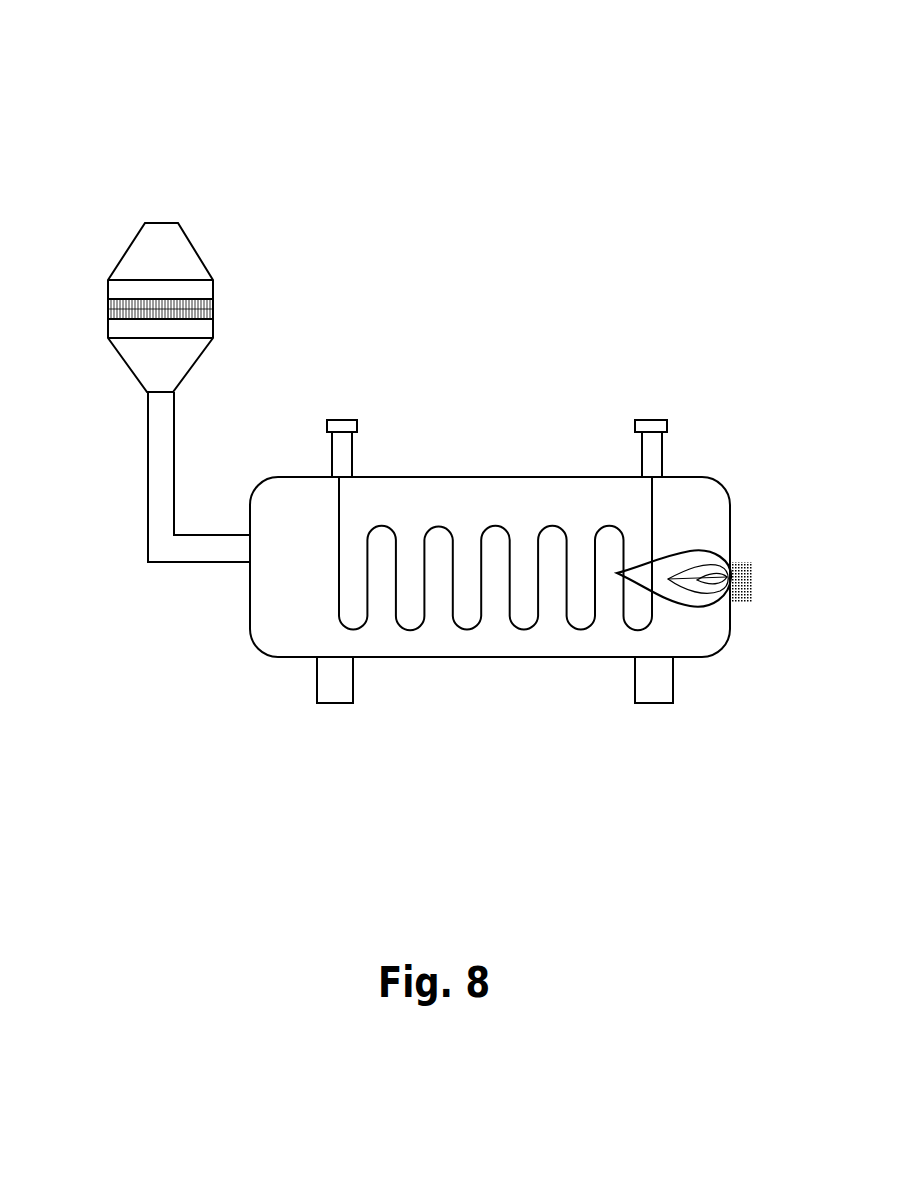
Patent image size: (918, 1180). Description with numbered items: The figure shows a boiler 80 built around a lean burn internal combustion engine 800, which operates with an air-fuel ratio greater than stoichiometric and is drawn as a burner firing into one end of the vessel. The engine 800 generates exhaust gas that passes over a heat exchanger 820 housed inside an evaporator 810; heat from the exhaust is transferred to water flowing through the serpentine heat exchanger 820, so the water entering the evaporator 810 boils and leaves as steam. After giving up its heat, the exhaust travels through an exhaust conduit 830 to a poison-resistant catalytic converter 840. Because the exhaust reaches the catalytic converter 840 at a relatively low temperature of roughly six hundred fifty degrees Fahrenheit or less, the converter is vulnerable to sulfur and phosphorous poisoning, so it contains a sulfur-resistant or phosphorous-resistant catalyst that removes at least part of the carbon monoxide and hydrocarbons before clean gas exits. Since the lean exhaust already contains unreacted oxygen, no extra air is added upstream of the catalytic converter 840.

The boiler 80 is at (94, 47).
The lean burn internal combustion engine 800 is at (776, 558).
The evaporator 810 is at (541, 684).
The heat exchanger 820 is at (510, 507).
The exhaust conduit 830 is at (131, 432).
The poison-resistant catalytic converter 840 is at (88, 307).